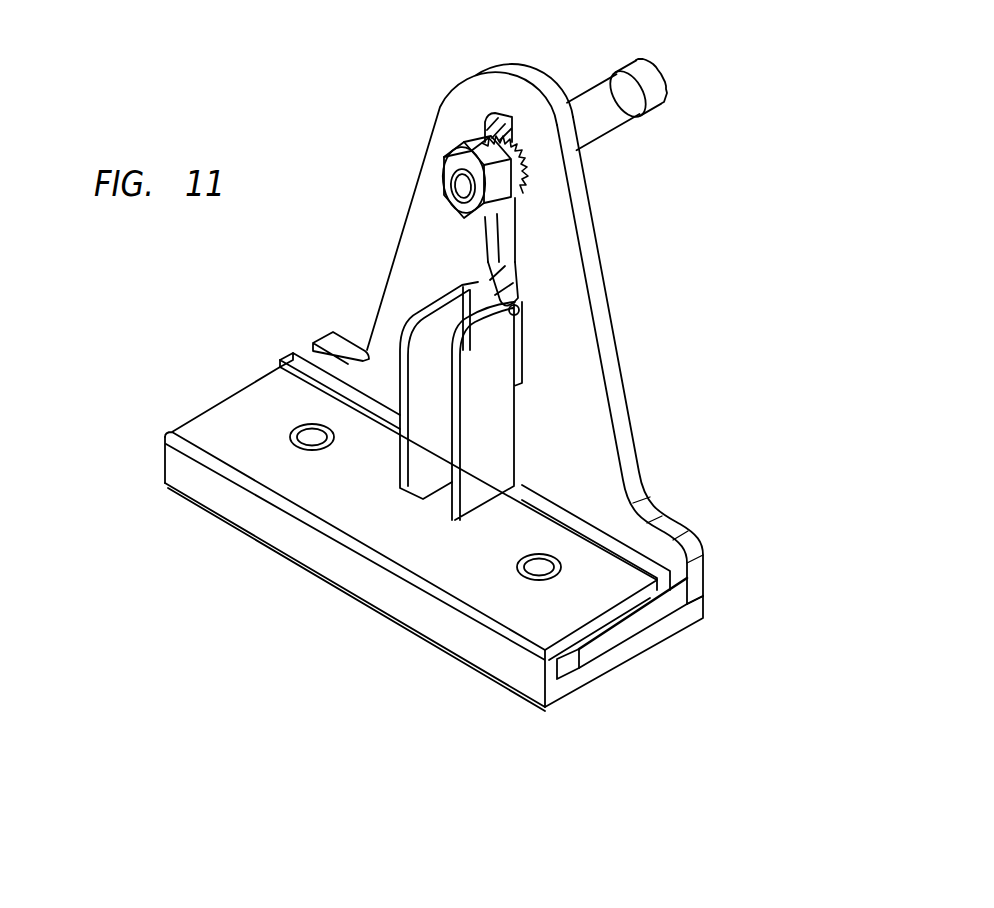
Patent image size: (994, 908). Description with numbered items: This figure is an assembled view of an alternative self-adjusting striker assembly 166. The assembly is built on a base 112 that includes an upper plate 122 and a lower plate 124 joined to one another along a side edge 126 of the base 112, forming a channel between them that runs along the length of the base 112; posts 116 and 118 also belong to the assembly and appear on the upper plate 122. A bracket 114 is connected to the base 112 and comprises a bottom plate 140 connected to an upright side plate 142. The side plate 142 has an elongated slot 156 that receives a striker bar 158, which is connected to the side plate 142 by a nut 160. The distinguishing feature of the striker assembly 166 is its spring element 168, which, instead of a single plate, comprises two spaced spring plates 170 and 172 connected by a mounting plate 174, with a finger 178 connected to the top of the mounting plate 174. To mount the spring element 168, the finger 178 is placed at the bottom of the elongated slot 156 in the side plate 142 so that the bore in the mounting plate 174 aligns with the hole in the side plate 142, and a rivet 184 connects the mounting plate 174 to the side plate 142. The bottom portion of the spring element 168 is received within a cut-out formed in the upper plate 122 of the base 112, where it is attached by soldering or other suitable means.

The base 112 is at (145, 413).
The bracket 114 is at (722, 231).
The post 116 is at (292, 441).
The post 118 is at (526, 578).
The upper plate 122 is at (247, 420).
The lower plate 124 is at (577, 677).
The side edge 126 is at (313, 545).
The bottom plate 140 is at (660, 610).
The side plate 142 is at (413, 202).
The elongated slot 156 is at (482, 113).
The striker bar 158 is at (604, 134).
The nut 160 is at (448, 150).
The striker assembly 166 is at (316, 102).
The spring element 168 is at (543, 396).
The spring plate 170 is at (417, 313).
The spring plate 172 is at (490, 368).
The mounting plate 174 is at (510, 245).
The finger 178 is at (512, 208).
The rivet 184 is at (518, 300).